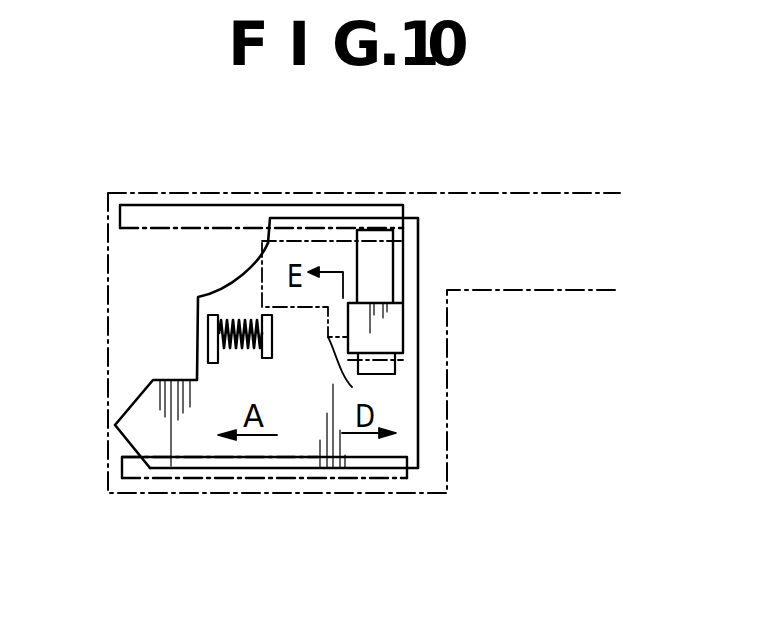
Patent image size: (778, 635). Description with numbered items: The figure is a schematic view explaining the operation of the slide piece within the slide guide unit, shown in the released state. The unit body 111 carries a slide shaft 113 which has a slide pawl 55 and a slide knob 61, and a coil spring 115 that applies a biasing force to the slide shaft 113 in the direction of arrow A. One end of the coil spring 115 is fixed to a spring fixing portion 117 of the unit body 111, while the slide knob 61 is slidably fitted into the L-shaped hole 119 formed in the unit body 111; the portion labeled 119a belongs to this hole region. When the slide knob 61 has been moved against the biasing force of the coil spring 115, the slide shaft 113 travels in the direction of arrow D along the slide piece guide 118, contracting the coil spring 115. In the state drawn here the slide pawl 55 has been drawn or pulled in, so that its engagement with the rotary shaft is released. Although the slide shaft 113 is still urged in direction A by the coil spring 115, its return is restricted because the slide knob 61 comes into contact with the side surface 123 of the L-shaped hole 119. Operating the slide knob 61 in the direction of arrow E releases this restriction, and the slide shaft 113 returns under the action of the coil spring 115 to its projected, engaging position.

The unit body 111 is at (543, 203).
The slide piece guide 118 is at (177, 211).
The slide shaft 113 is at (418, 448).
The slide pawl 55 is at (145, 412).
The L-shaped hole 119 is at (312, 254).
The projection 119a is at (384, 268).
The slide knob 61 is at (398, 322).
The coil spring 115 is at (230, 327).
The spring fixing portion 117 is at (268, 359).
The side surface 123 is at (352, 387).